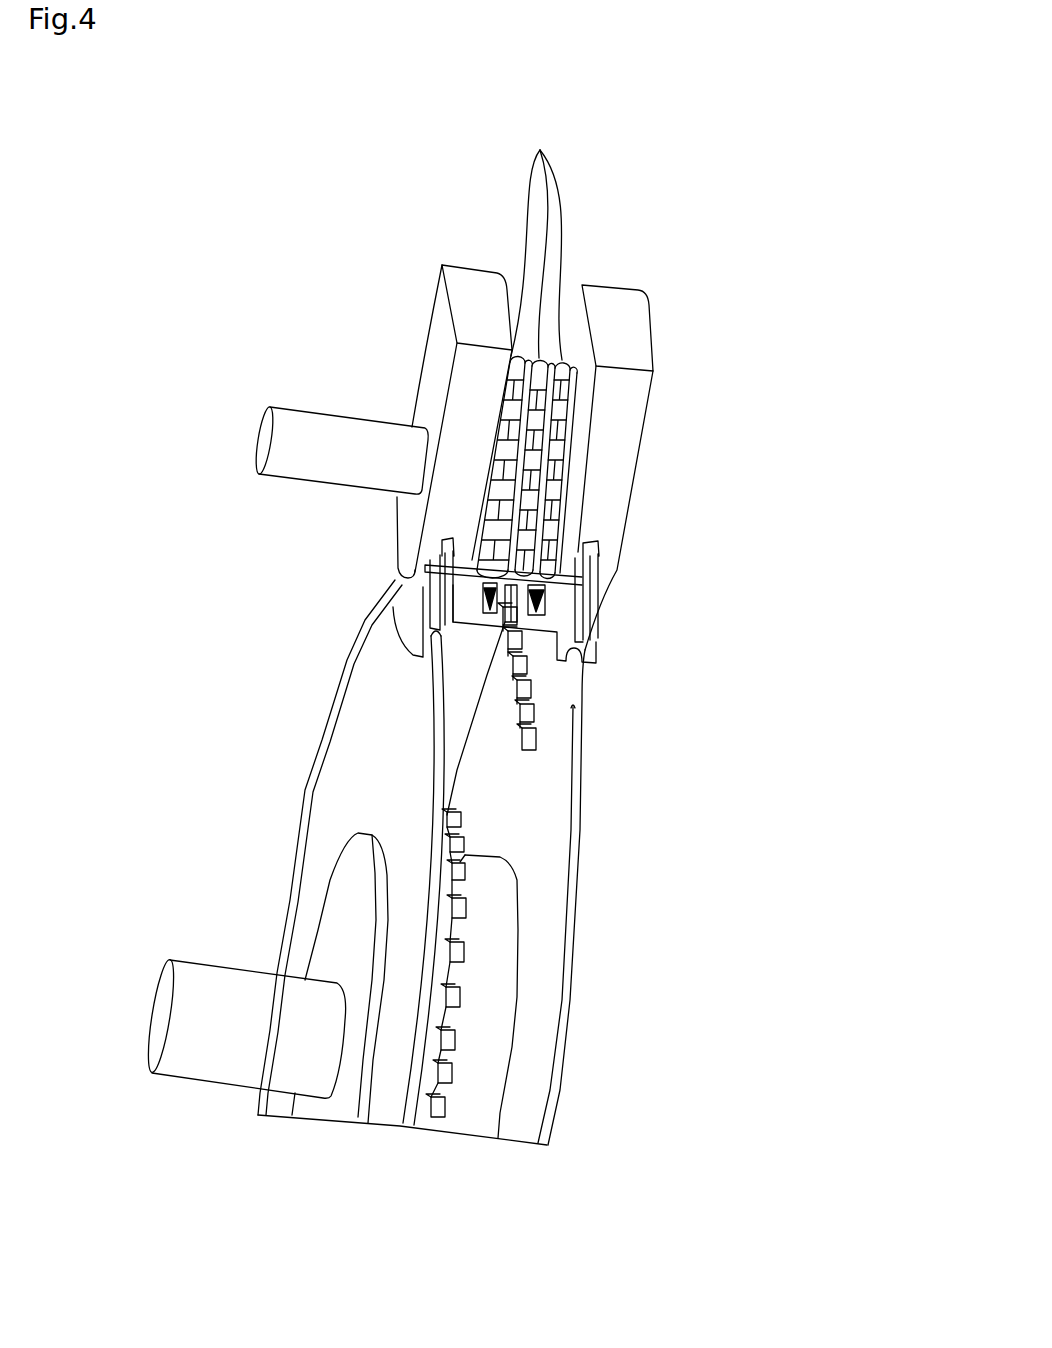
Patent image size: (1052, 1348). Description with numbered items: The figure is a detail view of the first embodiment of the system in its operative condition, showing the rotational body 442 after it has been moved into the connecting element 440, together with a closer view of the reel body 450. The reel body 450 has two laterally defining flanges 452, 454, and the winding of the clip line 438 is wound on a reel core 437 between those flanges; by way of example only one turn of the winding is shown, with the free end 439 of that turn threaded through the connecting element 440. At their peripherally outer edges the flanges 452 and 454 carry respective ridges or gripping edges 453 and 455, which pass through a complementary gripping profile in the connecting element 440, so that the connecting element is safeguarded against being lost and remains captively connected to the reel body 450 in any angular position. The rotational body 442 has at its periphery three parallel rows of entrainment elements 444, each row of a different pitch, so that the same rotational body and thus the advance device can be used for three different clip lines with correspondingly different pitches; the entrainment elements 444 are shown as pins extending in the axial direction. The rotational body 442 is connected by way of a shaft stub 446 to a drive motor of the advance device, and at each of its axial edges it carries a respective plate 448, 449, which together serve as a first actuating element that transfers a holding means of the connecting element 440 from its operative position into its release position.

The reel core 437 is at (480, 1087).
The clip line 438 is at (438, 1103).
The free end 439 is at (528, 738).
The connecting element 440 is at (604, 557).
The rotational body 442 is at (718, 408).
The entrainment elements 444 is at (544, 235).
The shaft stub 446 is at (287, 424).
The plate 448 is at (442, 347).
The plate 449 is at (608, 377).
The reel body 450 is at (647, 1122).
The flange 452 is at (350, 805).
The gripping edge 453 is at (353, 645).
The flange 454 is at (553, 807).
The gripping edge 455 is at (570, 943).